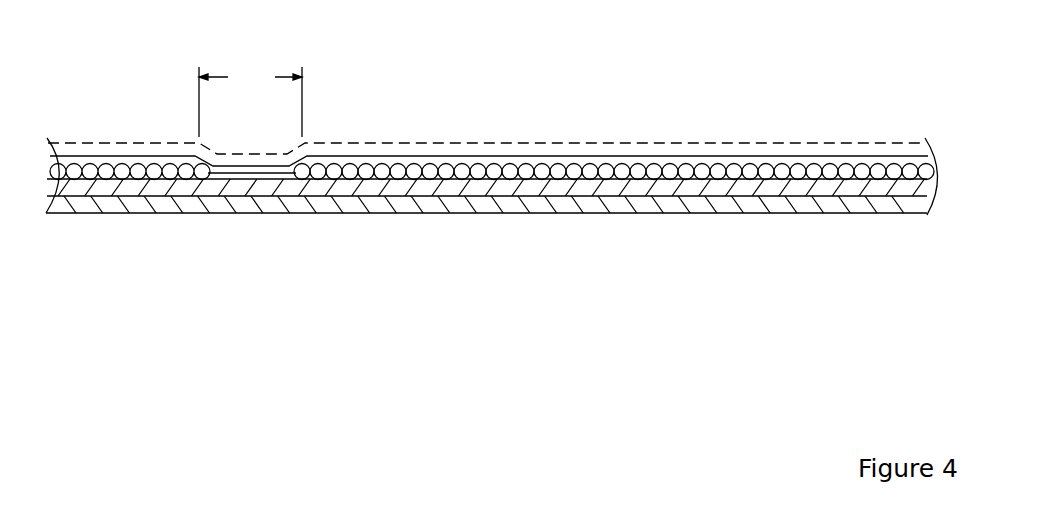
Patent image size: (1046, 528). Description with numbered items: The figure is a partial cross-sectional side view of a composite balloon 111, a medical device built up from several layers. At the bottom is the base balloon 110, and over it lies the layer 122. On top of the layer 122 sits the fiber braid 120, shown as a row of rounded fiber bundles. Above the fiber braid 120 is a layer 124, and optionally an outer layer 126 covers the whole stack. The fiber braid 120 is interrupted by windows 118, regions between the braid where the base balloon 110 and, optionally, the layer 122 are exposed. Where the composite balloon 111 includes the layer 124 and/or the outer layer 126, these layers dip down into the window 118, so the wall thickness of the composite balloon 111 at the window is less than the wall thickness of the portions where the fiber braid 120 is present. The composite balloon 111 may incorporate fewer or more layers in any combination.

The base balloon 110 is at (520, 204).
The composite balloon 111 is at (537, 75).
The windows 118 is at (250, 120).
The fiber braid 120 is at (698, 164).
The layer 122 is at (613, 188).
The layer 124 is at (127, 157).
The outer layer 126 is at (393, 143).